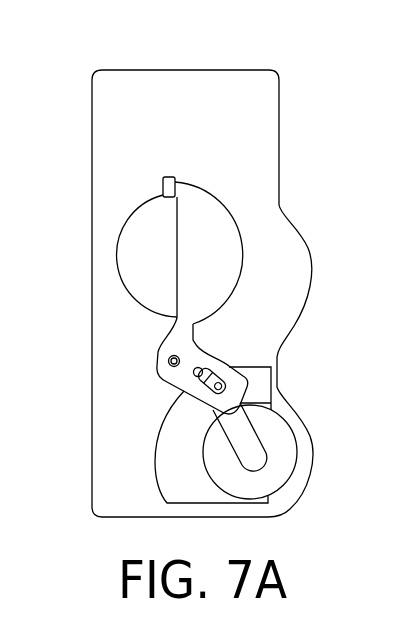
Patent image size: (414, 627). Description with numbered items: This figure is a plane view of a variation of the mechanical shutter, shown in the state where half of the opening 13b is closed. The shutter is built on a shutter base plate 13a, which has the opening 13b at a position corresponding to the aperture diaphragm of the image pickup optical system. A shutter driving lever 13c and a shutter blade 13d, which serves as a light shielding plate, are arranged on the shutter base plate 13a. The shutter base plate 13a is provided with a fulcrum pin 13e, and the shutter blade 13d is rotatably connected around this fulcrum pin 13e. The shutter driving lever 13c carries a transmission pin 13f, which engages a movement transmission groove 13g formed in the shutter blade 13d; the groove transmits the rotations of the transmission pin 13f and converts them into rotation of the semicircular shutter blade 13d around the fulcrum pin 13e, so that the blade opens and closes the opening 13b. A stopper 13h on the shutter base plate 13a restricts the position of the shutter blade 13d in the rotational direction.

The shutter base plate 13a is at (231, 91).
The opening 13b is at (138, 268).
The shutter driving lever 13c is at (265, 461).
The shutter blade 13d is at (215, 225).
The fulcrum pin 13e is at (169, 361).
The transmission pin 13f is at (215, 386).
The movement transmission groove 13g is at (200, 371).
The stopper 13h is at (165, 194).